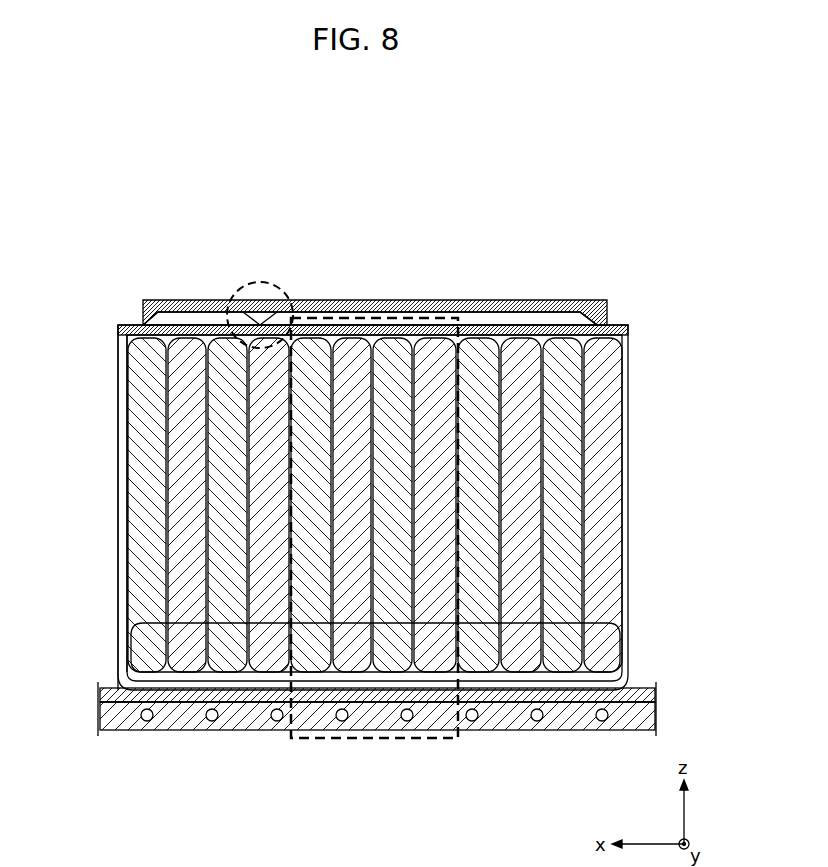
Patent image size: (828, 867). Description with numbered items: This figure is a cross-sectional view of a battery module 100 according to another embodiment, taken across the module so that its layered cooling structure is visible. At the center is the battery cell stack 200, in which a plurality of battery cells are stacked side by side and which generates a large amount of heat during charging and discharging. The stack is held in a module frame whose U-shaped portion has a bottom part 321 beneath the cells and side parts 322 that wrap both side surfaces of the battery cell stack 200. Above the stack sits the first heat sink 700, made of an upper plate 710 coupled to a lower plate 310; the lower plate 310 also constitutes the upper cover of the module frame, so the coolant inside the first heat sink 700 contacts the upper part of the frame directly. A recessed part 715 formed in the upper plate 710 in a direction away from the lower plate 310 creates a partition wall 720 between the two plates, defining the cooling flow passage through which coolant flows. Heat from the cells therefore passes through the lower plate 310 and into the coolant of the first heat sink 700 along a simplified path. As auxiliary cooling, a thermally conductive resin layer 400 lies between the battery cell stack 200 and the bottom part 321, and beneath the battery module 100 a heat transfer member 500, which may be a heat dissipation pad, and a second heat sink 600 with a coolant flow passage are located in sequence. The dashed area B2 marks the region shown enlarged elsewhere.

The battery module 100 is at (387, 204).
The battery cell stack 200 is at (618, 525).
The lower plate 310 is at (628, 328).
The bottom part 321 is at (150, 672).
The side parts 322 is at (120, 359).
The thermally conductive resin layer 400 is at (190, 692).
The heat transfer member 500 is at (252, 708).
The second heat sink 600 is at (318, 720).
The first heat sink 700 is at (157, 299).
The upper plate 710 is at (425, 300).
The recessed part 715 is at (530, 318).
The partition wall 720 is at (262, 325).
The area B2 is at (458, 740).